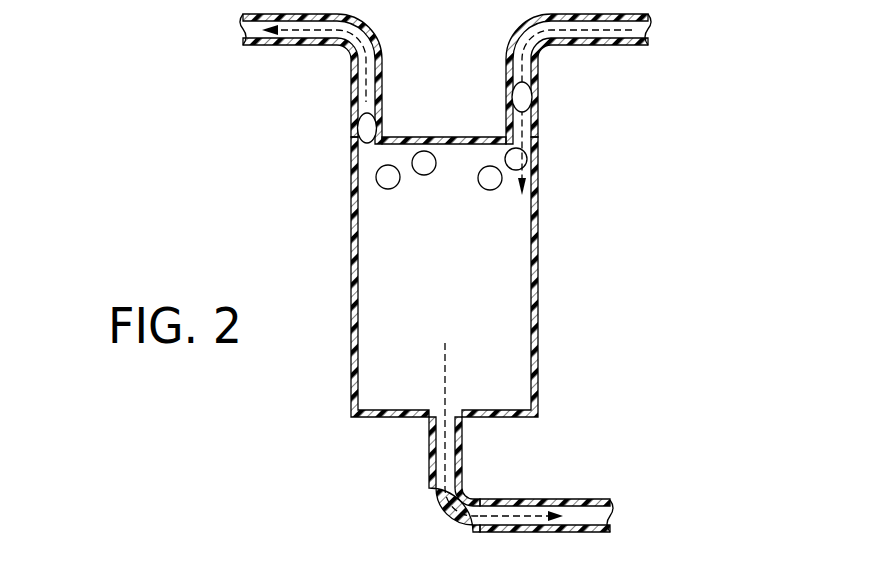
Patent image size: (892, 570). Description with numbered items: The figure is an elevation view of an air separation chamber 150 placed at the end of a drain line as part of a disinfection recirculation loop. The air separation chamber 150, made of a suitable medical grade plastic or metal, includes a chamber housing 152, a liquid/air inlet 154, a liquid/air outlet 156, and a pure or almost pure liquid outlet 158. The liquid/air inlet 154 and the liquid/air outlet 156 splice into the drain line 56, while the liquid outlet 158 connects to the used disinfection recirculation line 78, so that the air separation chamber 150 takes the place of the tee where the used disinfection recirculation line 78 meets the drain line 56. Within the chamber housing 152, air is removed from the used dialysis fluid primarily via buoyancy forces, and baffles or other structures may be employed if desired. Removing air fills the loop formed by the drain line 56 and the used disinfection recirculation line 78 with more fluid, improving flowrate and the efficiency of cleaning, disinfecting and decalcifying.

The air separation chamber 150 is at (268, 220).
The drain line 56 is at (283, 45).
The chamber housing 152 is at (540, 252).
The liquid/air inlet 154 is at (540, 107).
The liquid/air outlet 156 is at (387, 110).
The liquid outlet 158 is at (432, 423).
The used disinfection recirculation line 78 is at (540, 500).